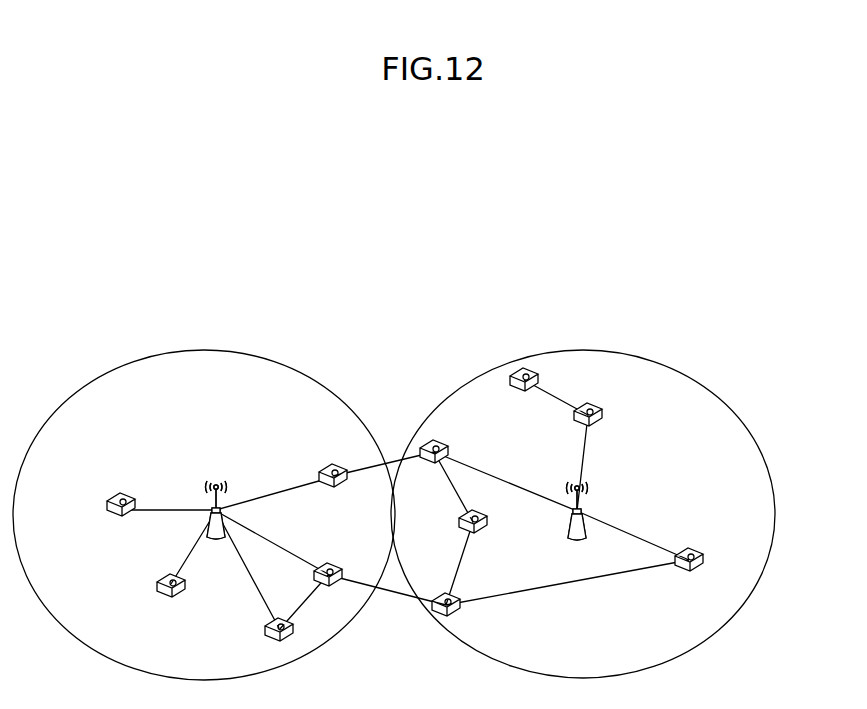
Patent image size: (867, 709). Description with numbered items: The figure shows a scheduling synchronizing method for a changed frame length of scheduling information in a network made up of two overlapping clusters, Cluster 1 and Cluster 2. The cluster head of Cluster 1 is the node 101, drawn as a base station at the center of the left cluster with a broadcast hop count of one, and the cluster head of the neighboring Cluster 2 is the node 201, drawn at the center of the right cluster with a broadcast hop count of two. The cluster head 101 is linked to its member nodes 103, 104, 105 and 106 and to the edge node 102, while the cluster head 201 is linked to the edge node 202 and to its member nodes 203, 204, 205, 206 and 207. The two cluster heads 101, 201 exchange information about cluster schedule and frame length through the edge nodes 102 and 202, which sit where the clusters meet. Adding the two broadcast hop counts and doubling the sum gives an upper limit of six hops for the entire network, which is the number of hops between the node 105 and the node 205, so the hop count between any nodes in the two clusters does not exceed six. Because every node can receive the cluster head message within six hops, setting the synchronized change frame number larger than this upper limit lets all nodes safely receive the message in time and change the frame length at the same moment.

The Cluster 1 is at (216, 522).
The Cluster 2 is at (577, 524).
The cluster head 101 is at (216, 508).
The edge node 102 is at (324, 453).
The node 103 is at (116, 529).
The node 104 is at (182, 610).
The node 105 is at (322, 554).
The node 106 is at (293, 650).
The cluster head 201 is at (580, 510).
The edge node 202 is at (463, 442).
The node 203 is at (501, 514).
The node 204 is at (685, 583).
The node 205 is at (453, 627).
The node 206 is at (620, 413).
The node 207 is at (558, 373).